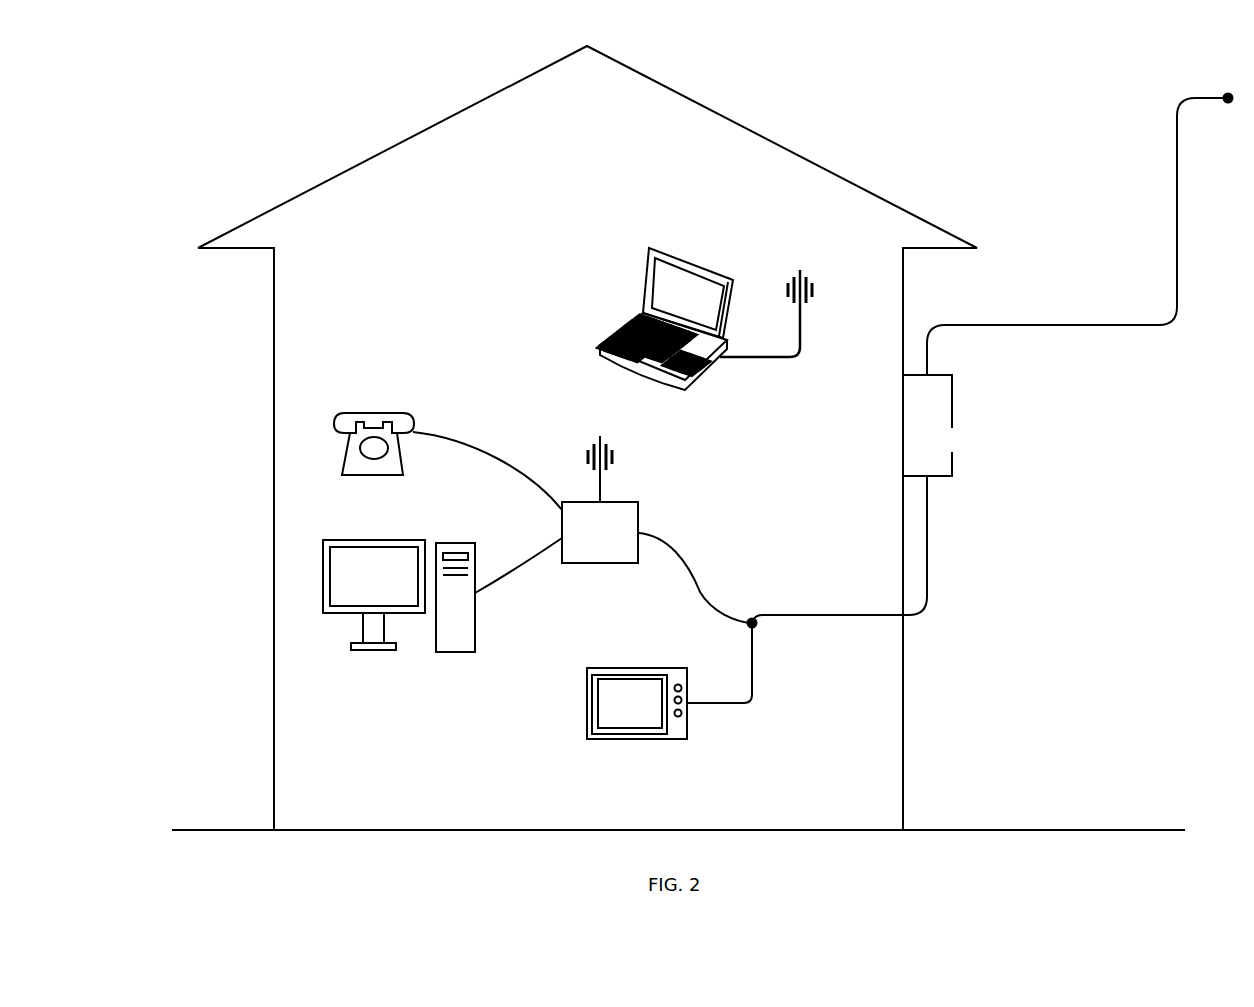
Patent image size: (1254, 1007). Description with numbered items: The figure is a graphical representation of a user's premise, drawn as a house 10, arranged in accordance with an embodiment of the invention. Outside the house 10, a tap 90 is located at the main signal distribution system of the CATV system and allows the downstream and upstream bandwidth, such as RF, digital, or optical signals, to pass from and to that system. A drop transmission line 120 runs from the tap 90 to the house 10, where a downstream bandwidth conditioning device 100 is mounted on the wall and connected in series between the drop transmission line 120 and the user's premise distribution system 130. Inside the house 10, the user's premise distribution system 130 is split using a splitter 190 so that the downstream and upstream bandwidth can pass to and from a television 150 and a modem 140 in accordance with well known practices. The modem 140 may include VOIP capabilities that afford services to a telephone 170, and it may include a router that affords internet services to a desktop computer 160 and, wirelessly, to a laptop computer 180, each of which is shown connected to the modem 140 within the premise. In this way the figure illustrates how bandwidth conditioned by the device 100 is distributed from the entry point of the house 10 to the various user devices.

The house 10 is at (908, 91).
The tap 90 is at (1228, 96).
The downstream bandwidth conditioning device 100 is at (952, 414).
The drop transmission line 120 is at (1177, 223).
The user's premise distribution system 130 is at (858, 684).
The modem 140 is at (625, 502).
The television 150 is at (636, 740).
The desktop computer 160 is at (370, 651).
The telephone 170 is at (372, 412).
The laptop computer 180 is at (670, 252).
The splitter 190 is at (757, 625).